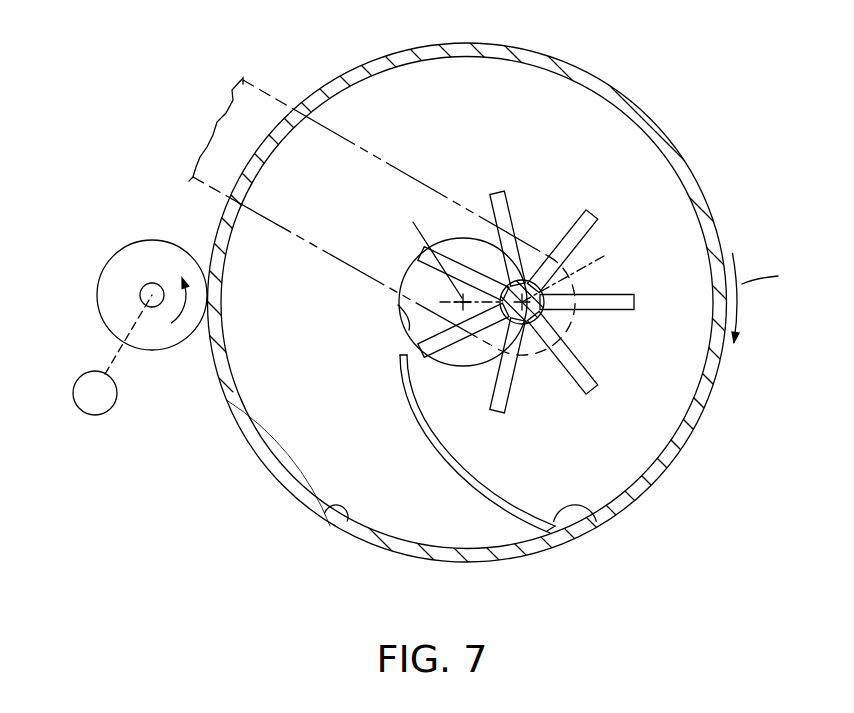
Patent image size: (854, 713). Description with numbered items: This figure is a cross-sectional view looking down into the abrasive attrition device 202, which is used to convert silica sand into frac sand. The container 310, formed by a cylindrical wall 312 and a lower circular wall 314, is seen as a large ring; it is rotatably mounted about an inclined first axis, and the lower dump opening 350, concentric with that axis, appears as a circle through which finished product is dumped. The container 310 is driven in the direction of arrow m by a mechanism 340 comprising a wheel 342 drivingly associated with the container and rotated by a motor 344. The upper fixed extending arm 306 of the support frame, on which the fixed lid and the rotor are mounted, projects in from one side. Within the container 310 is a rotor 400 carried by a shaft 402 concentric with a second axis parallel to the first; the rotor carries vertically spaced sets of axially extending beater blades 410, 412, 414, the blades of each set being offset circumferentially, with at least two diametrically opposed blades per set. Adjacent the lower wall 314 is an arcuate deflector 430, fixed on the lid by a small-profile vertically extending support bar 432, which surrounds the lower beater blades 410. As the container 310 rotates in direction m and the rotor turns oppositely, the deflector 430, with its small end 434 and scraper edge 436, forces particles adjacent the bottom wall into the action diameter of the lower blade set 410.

The abrasive attrition device 202 is at (702, 104).
The upper fixed extending arm 306 is at (403, 170).
The container 310 is at (268, 471).
The cylindrical wall 312 is at (347, 523).
The lower circular wall 314 is at (560, 103).
The mechanism 340 is at (115, 328).
The wheel 342 is at (161, 241).
The motor 344 is at (104, 418).
The lower dump opening 350 is at (396, 303).
The rotor 400 is at (606, 302).
The shaft 402 is at (560, 323).
The beater blades 410 is at (504, 398).
The beater blades 412 is at (590, 388).
The beater blades 414 is at (632, 295).
The arcuate deflector 430 is at (415, 470).
The support bar 432 is at (498, 512).
The small end 434 is at (398, 357).
The scraper edge 436 is at (596, 514).